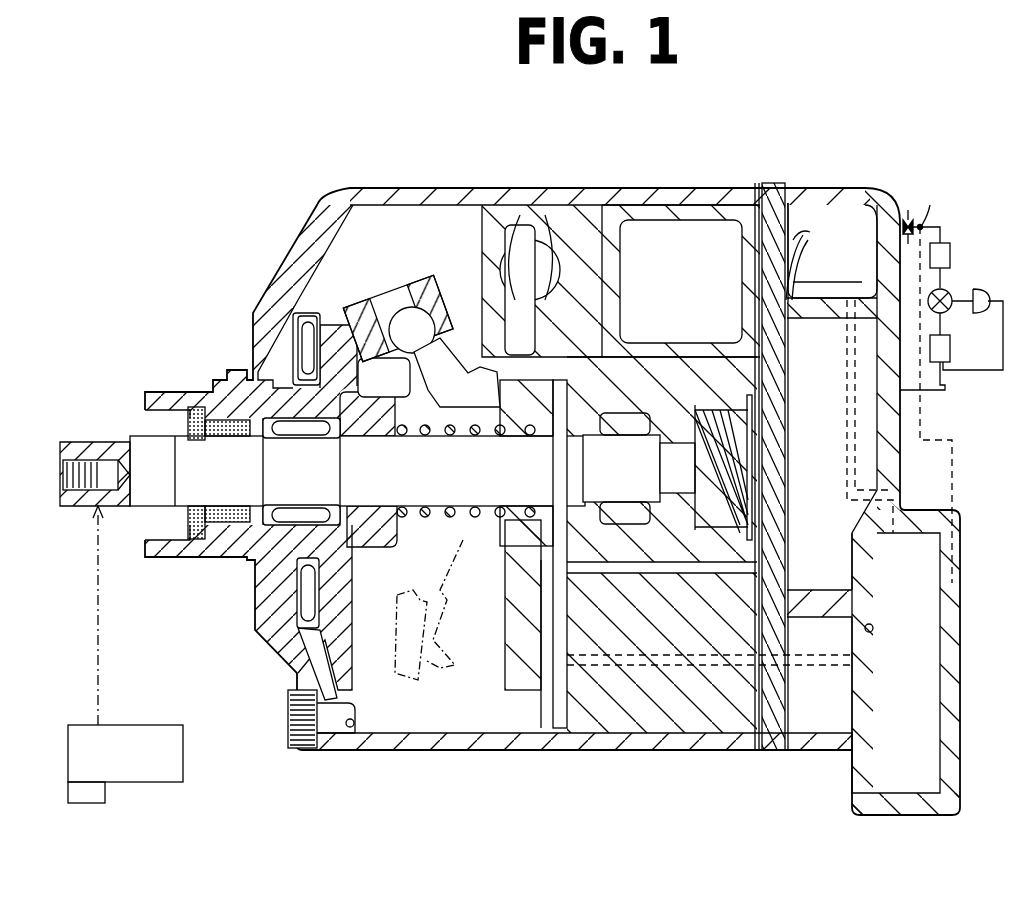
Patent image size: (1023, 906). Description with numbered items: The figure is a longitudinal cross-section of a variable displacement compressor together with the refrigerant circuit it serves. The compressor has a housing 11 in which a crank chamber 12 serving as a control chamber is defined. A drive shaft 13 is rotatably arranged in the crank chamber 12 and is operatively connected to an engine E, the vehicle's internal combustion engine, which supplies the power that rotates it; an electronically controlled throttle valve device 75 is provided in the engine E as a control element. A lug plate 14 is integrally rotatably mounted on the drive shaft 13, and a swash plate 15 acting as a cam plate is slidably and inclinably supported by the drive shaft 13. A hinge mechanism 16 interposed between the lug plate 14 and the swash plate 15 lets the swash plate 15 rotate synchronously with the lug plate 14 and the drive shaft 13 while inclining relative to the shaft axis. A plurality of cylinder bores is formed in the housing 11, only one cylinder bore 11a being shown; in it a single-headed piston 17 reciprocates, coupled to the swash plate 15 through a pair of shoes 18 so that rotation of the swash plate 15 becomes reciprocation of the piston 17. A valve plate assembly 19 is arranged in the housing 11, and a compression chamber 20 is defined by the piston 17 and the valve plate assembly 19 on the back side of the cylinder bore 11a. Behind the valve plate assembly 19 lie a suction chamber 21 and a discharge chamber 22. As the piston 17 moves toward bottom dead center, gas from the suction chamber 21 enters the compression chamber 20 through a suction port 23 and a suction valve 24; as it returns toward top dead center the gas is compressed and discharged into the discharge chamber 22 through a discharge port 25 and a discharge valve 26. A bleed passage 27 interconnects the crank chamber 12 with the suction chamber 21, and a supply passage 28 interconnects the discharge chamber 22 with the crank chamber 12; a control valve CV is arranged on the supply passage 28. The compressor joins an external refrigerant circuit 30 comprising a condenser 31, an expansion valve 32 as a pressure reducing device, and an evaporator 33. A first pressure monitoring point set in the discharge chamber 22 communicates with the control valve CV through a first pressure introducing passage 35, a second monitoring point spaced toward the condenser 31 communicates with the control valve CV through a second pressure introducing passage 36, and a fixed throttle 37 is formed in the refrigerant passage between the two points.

The housing 11 is at (548, 752).
The cylinder bore 11a is at (668, 200).
The crank chamber 12 is at (478, 717).
The drive shaft 13 is at (445, 497).
The lug plate 14 is at (318, 325).
The swash plate 15 is at (517, 633).
The hinge mechanism 16 is at (390, 290).
The single-headed piston 17 is at (567, 215).
The shoes 18 is at (518, 205).
The valve plate assembly 19 is at (775, 205).
The compression chamber 20 is at (757, 200).
The suction chamber 21 is at (832, 433).
The discharge chamber 22 is at (800, 656).
The suction port 23 is at (780, 333).
The suction valve 24 is at (738, 308).
The discharge port 25 is at (738, 238).
The discharge valve 26 is at (800, 238).
The bleed passage 27 is at (635, 575).
The supply passage 28 is at (873, 625).
The external refrigerant circuit 30 is at (955, 190).
The condenser 31 is at (950, 245).
The expansion valve 32 is at (950, 292).
The evaporator 33 is at (952, 346).
The first pressure introducing passage 35 is at (890, 472).
The second pressure introducing passage 36 is at (920, 420).
The fixed throttle 37 is at (905, 218).
The electronically controlled throttle valve device 75 is at (105, 801).
The engine E is at (183, 752).
The control valve CV is at (924, 660).